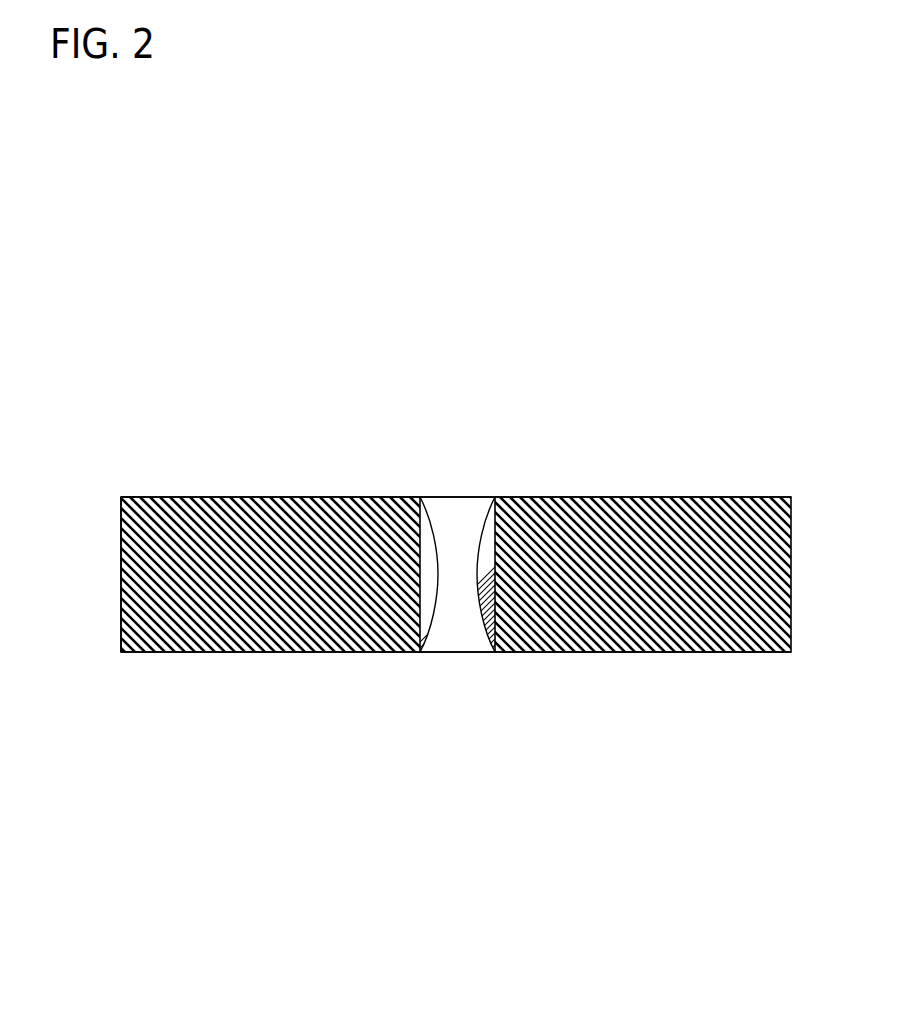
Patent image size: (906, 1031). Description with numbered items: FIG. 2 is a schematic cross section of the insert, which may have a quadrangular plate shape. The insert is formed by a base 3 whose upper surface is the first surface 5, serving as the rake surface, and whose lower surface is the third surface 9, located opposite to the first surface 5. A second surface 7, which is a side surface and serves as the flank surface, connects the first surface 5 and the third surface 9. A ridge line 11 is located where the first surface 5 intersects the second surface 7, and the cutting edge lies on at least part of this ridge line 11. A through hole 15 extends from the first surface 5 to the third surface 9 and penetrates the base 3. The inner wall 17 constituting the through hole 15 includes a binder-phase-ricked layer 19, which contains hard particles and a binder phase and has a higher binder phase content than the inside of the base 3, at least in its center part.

The base 3 is at (650, 577).
The first surface 5 is at (287, 497).
The second surface 7 is at (121, 572).
The third surface 9 is at (274, 652).
The ridge line 11 is at (121, 497).
The through hole 15 is at (458, 540).
The inner wall 17 is at (438, 608).
The binder-phase-ricked layer 19 is at (480, 553).